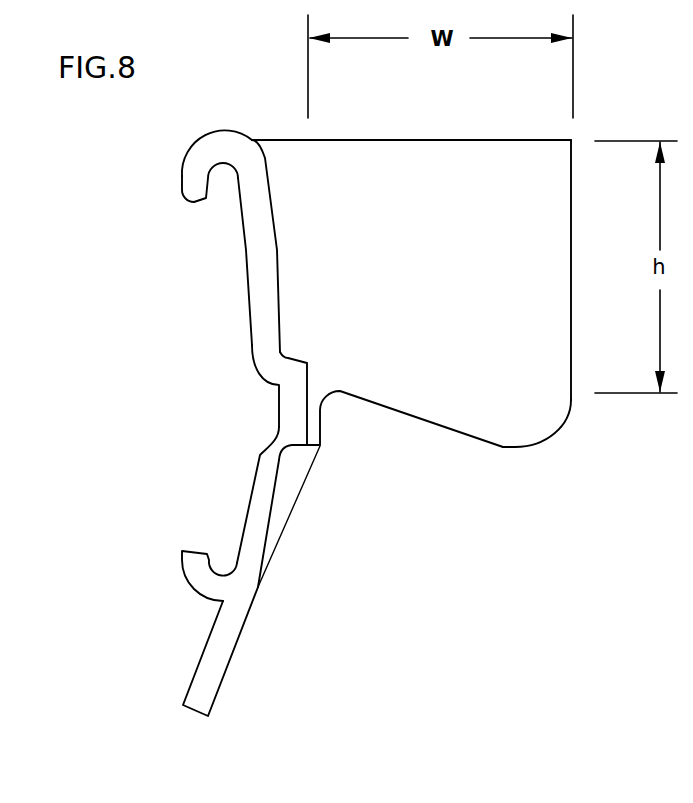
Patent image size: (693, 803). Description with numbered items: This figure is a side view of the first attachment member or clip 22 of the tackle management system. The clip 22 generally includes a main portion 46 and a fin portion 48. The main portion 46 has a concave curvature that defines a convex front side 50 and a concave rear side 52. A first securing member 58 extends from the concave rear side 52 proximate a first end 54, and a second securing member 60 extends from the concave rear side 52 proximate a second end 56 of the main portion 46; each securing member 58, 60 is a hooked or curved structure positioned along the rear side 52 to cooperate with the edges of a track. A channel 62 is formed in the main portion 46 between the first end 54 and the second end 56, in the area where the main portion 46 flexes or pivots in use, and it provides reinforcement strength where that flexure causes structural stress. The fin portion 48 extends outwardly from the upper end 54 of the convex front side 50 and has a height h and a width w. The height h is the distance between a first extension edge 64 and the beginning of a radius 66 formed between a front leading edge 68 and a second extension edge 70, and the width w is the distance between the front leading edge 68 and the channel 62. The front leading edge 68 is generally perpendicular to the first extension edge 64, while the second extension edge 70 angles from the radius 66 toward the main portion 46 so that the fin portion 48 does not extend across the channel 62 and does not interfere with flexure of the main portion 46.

The first attachment member 22 is at (392, 650).
The main portion 46 is at (263, 335).
The fin portion 48 is at (522, 405).
The convex front side 50 is at (273, 523).
The concave rear side 52 is at (257, 502).
The first end 54 is at (225, 135).
The second end 56 is at (212, 678).
The first securing member 58 is at (193, 177).
The second securing member 60 is at (197, 563).
The channel 62 is at (292, 420).
The first extension edge 64 is at (445, 141).
The radius 66 is at (515, 448).
The front leading edge 68 is at (571, 252).
The second extension edge 70 is at (405, 412).